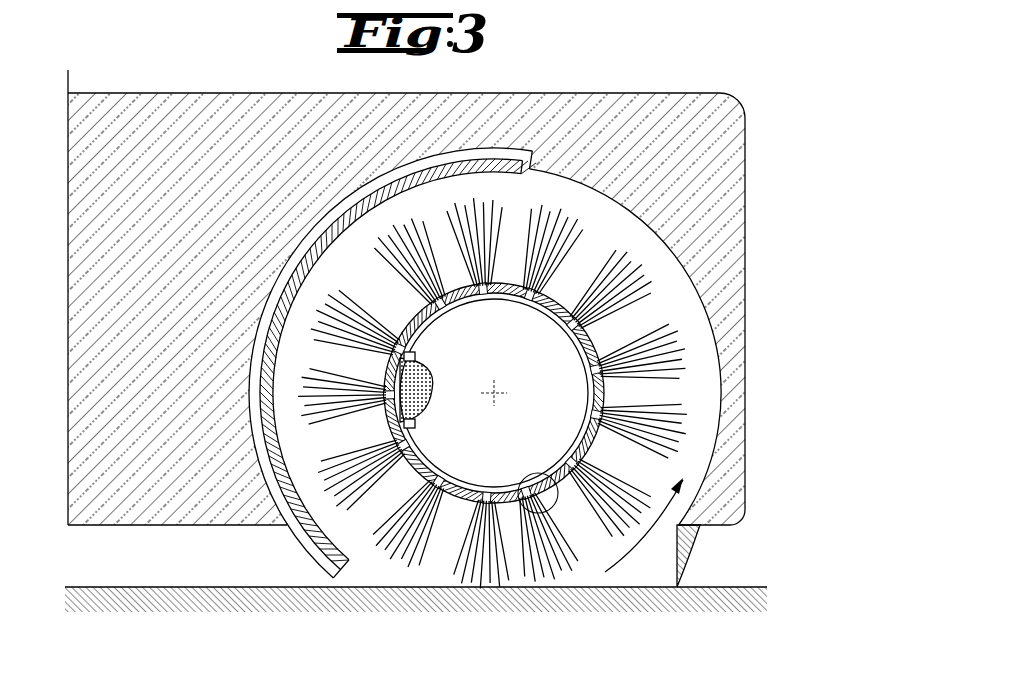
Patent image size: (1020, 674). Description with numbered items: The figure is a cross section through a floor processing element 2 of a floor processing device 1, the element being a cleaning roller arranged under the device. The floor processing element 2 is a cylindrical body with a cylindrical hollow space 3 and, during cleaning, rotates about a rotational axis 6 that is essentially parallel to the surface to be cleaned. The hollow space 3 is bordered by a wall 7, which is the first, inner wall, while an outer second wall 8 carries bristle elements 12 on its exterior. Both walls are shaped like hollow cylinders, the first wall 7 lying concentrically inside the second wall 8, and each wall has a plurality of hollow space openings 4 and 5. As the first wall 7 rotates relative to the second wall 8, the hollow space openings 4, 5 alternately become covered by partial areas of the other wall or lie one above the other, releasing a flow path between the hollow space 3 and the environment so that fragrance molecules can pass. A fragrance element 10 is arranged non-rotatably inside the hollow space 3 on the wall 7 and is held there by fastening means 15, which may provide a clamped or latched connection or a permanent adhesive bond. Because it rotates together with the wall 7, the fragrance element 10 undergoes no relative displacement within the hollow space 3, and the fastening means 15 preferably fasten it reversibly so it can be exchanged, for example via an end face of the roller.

The floor processing device 1 is at (760, 138).
The floor processing element 2 is at (328, 528).
The hollow space 3 is at (467, 320).
The hollow space openings 4 is at (519, 290).
The hollow space openings 5 is at (440, 303).
The rotational axis 6 is at (499, 390).
The wall 7 is at (563, 470).
The second wall 8 is at (556, 486).
The fragrance element 10 is at (424, 395).
The bristle elements 12 is at (667, 357).
The fastening means 15 is at (415, 360).